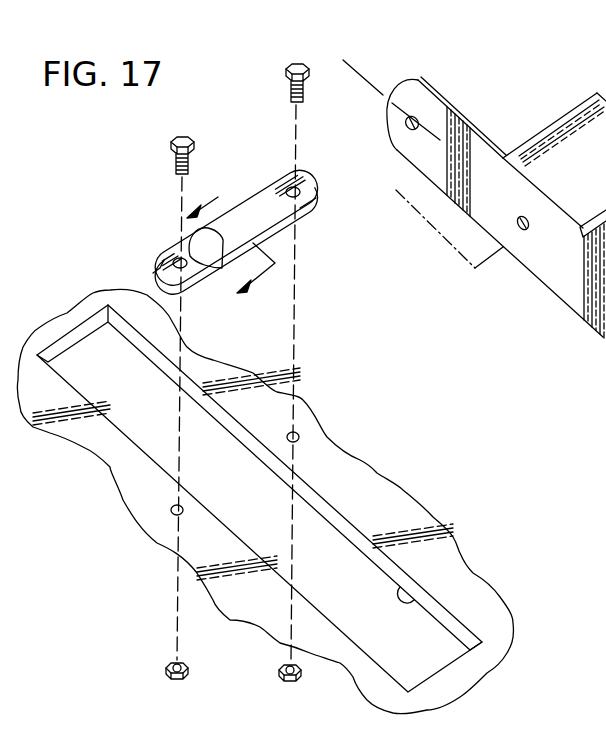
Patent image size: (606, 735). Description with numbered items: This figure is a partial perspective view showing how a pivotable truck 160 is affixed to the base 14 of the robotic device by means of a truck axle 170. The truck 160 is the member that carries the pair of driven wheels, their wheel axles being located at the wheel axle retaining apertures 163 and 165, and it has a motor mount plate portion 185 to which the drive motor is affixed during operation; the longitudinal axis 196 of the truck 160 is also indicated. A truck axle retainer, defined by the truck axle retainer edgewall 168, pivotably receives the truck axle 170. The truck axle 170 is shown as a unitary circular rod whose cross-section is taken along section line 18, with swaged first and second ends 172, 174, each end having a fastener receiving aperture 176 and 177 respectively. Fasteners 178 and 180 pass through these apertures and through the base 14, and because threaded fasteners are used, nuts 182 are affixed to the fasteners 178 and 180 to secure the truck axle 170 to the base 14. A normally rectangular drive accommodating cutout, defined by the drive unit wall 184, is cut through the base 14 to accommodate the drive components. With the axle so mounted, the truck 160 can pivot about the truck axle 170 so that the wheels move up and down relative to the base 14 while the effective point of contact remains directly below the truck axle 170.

The base 14 is at (368, 493).
The upper side 18 is at (241, 235).
The pivotable truck 160 is at (514, 215).
The wheel axle retaining aperture 163 is at (418, 116).
The wheel axle retaining aperture 165 is at (605, 344).
The truck axle retainer edgewall 168 is at (524, 230).
The truck axle 170 is at (265, 184).
The first swaged end 172 is at (318, 202).
The second swaged end 174 is at (150, 270).
The fastener receiving aperture 176 is at (303, 192).
The fastener receiving aperture 177 is at (170, 256).
The fastener 178 is at (287, 80).
The fastener 180 is at (173, 160).
The nuts 182 is at (168, 666).
The drive unit wall 184 is at (418, 598).
The motor mount plate portion 185 is at (605, 172).
The longitudinal axis 196 is at (374, 80).